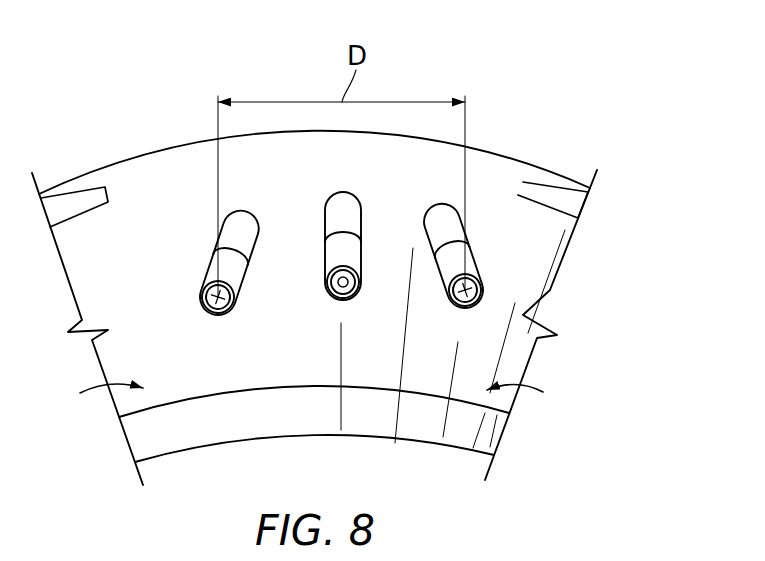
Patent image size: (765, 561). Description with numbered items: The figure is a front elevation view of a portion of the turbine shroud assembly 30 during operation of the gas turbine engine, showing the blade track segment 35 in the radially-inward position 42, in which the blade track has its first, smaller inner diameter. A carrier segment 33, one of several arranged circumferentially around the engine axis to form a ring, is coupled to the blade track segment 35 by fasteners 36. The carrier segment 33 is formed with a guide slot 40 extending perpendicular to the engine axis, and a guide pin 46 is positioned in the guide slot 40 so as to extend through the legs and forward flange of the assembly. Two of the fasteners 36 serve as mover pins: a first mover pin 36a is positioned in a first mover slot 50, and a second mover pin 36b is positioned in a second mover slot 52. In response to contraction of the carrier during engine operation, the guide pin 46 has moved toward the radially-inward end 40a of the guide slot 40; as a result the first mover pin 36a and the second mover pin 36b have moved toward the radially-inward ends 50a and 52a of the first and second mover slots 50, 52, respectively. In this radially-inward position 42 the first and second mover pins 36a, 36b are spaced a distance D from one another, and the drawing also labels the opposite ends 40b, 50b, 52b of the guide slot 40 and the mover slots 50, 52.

The turbine shroud assembly 30 is at (97, 100).
The carrier segment 33 is at (507, 187).
The blade track segment 35 is at (578, 240).
The fasteners 36 is at (238, 382).
The first mover pin 36a is at (442, 306).
The second mover pin 36b is at (202, 314).
The guide slot 40 is at (383, 208).
The radially-inward end of guide slot 40a is at (348, 310).
The roller pin second end 40b is at (348, 194).
The radially-inward position 42 is at (591, 122).
The guide pin 46 is at (322, 303).
The first mover slot 50 is at (477, 213).
The radially-inward end of first mover slot 50a is at (478, 312).
The right roller pin second end 50b is at (457, 203).
The second mover slot 52 is at (230, 229).
The radially-inward end of second mover slot 52a is at (231, 320).
The left roller pin second end 52b is at (244, 206).